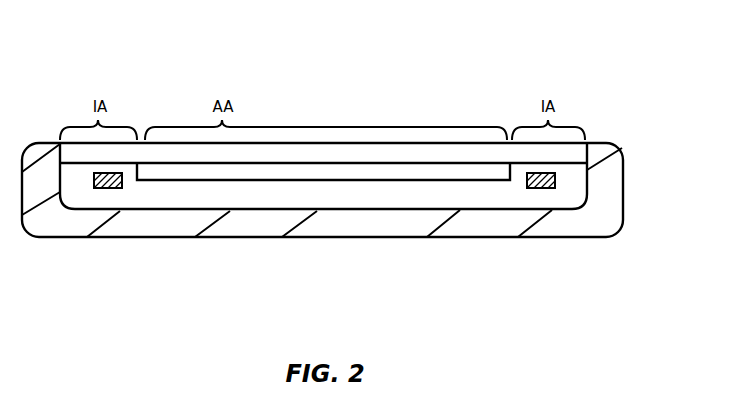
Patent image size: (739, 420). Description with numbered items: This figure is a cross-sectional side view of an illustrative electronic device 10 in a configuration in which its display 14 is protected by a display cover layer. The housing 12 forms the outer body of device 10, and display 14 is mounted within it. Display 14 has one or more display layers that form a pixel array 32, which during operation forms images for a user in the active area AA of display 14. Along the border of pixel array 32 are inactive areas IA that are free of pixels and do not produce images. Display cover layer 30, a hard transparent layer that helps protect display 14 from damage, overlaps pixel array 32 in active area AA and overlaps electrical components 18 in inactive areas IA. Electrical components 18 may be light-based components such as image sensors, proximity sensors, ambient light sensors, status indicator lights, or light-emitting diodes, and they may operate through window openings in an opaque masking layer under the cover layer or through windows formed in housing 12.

The device 10 is at (650, 237).
The housing 12 is at (248, 230).
The display 14 is at (441, 92).
The electrical components 18 is at (105, 189).
The display cover layer 30 is at (347, 153).
The pixel array 32 is at (400, 175).